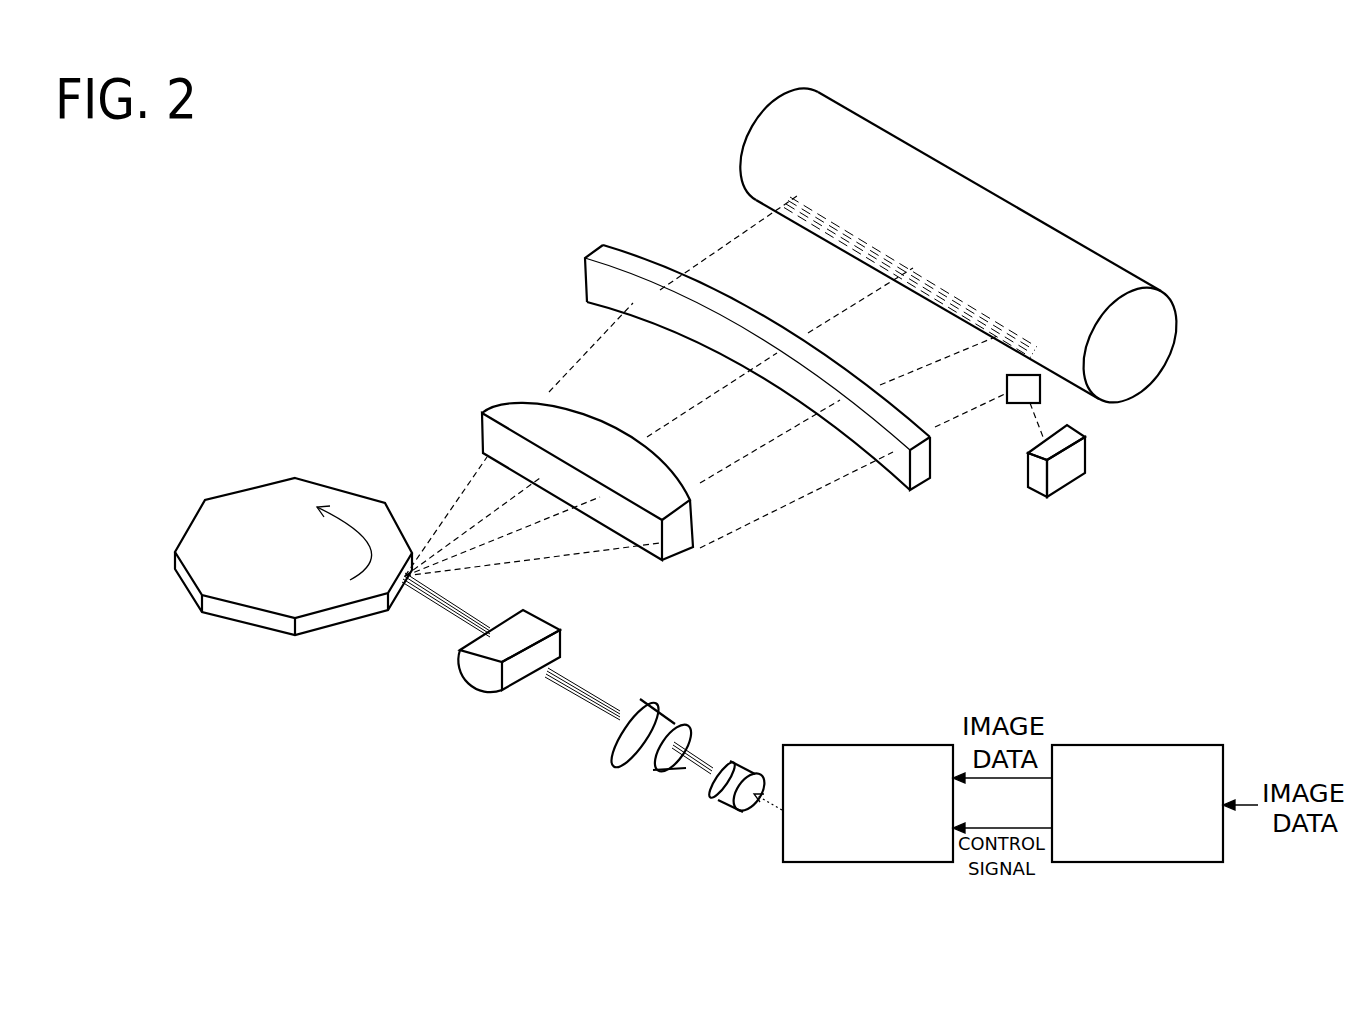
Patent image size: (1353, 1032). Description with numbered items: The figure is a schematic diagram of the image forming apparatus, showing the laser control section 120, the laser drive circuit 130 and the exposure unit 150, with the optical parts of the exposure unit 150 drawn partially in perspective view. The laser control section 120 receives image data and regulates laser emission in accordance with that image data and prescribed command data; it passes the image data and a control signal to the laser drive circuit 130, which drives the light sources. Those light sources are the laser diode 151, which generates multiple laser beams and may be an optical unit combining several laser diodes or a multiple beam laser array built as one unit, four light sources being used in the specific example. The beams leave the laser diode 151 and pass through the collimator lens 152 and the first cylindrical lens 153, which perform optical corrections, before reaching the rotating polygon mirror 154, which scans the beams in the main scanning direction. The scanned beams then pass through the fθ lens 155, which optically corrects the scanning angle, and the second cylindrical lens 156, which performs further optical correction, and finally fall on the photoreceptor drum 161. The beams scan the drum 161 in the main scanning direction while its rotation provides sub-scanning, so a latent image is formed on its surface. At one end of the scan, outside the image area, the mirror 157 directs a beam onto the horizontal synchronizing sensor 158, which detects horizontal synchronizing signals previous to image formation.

The exposure unit 150 is at (385, 238).
The laser diode 151 is at (737, 760).
The collimator lens 152 is at (640, 697).
The cylindrical lens 153 is at (548, 612).
The polygon mirror 154 is at (255, 495).
The fθ lens 155 is at (497, 400).
The cylindrical lens 156 is at (620, 250).
The mirror 157 is at (1040, 403).
The horizontal synchronizing sensor 158 is at (1027, 492).
The photoreceptor drum 161 is at (835, 100).
The laser drive circuit 130 is at (866, 864).
The laser control section 120 is at (1137, 864).